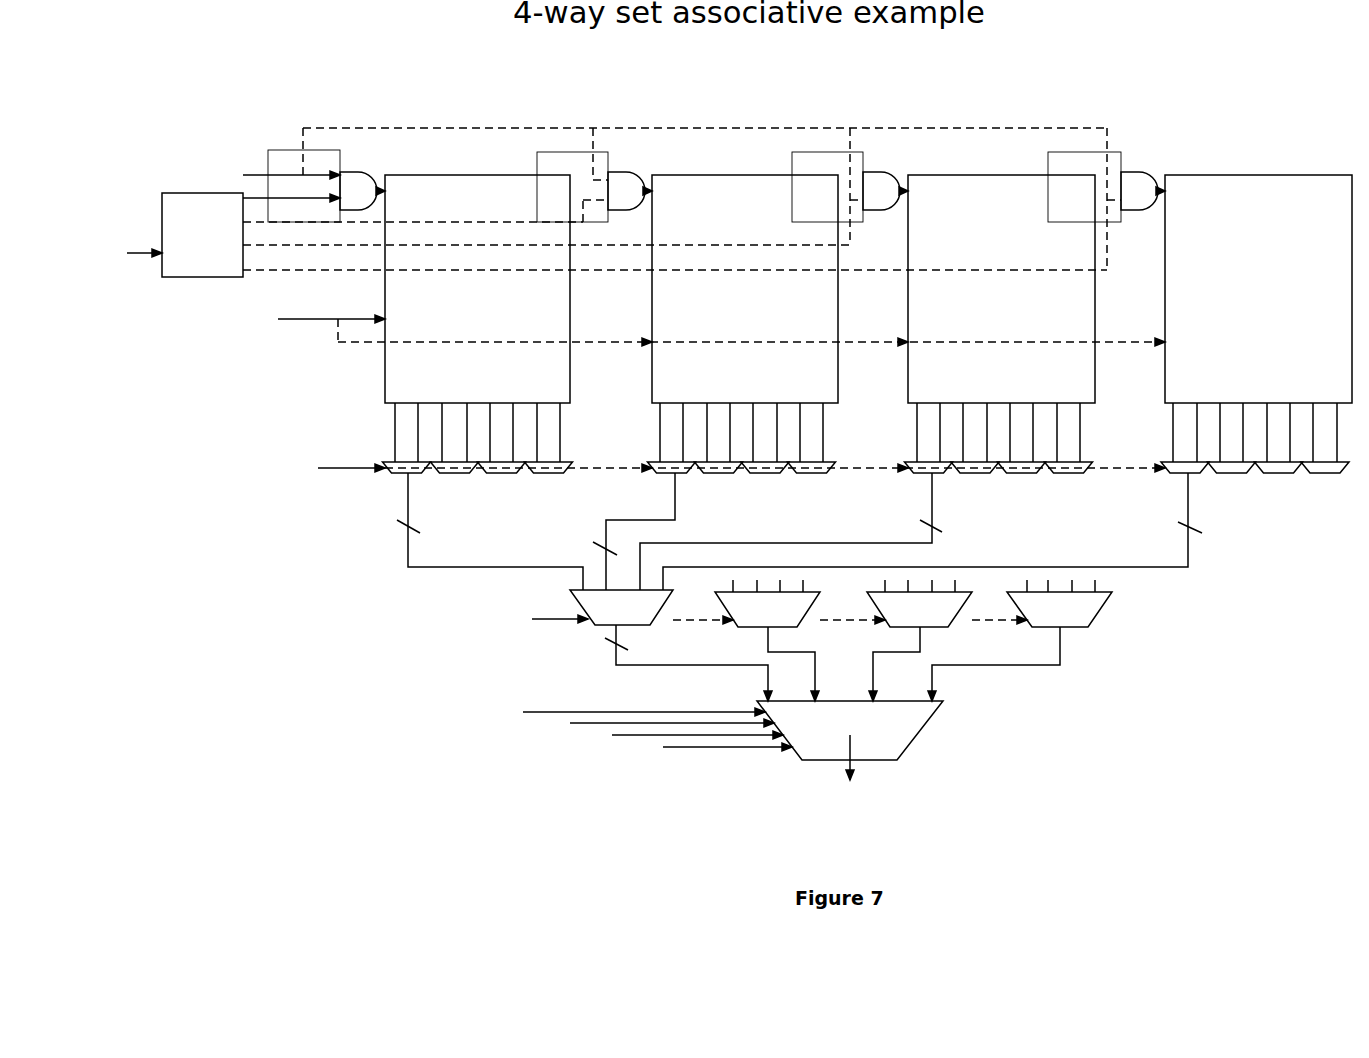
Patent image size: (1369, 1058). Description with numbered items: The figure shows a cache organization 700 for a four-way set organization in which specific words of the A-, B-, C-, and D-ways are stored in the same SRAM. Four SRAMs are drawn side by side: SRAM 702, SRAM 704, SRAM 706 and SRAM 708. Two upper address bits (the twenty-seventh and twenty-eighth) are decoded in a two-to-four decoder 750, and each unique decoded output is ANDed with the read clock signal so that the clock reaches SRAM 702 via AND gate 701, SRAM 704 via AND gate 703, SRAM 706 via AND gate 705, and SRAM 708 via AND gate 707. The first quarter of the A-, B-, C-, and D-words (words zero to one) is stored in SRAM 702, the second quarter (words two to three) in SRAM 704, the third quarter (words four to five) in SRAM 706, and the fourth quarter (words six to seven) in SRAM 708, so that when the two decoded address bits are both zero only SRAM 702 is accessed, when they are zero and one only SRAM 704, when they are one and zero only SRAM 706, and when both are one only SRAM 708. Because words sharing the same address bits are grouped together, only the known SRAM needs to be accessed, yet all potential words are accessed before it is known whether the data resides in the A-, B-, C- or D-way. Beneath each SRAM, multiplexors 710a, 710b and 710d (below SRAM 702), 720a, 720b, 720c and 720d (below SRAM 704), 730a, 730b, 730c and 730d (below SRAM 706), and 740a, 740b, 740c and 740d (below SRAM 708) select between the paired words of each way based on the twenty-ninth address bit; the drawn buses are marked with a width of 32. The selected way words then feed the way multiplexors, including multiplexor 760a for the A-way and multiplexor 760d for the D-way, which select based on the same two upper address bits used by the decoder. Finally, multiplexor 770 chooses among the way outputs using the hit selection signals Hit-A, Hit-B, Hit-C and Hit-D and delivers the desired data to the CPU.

The cache organization 700 is at (733, 873).
The AND gate 701 is at (350, 188).
The SRAM 702 is at (455, 188).
The AND gate 703 is at (617, 188).
The SRAM 704 is at (710, 188).
The AND gate 705 is at (875, 188).
The SRAM 706 is at (980, 188).
The AND gate 707 is at (1130, 188).
The SRAM 708 is at (1235, 188).
The multiplexor 710a is at (391, 453).
The multiplexor 710b is at (455, 453).
The multiplexor 710d is at (559, 453).
The multiplexor 720a is at (664, 453).
The multiplexor 720b is at (716, 453).
The multiplexor 720c is at (640, 453).
The multiplexor 720d is at (825, 453).
The multiplexor 730a is at (915, 453).
The multiplexor 730b is at (977, 453).
The multiplexor 730c is at (1029, 453).
The multiplexor 730d is at (1082, 453).
The multiplexor 740a is at (1171, 453).
The multiplexor 740b is at (1234, 453).
The multiplexor 740c is at (1280, 453).
The multiplexor 740d is at (1333, 453).
The 2-to-4 decoder 750 is at (183, 208).
The multiplexor 760a is at (595, 600).
The multiplexor 760d is at (1107, 602).
The multiplexor 770 is at (897, 725).
The 32-bit bus width indicator 32 is at (782, 582).